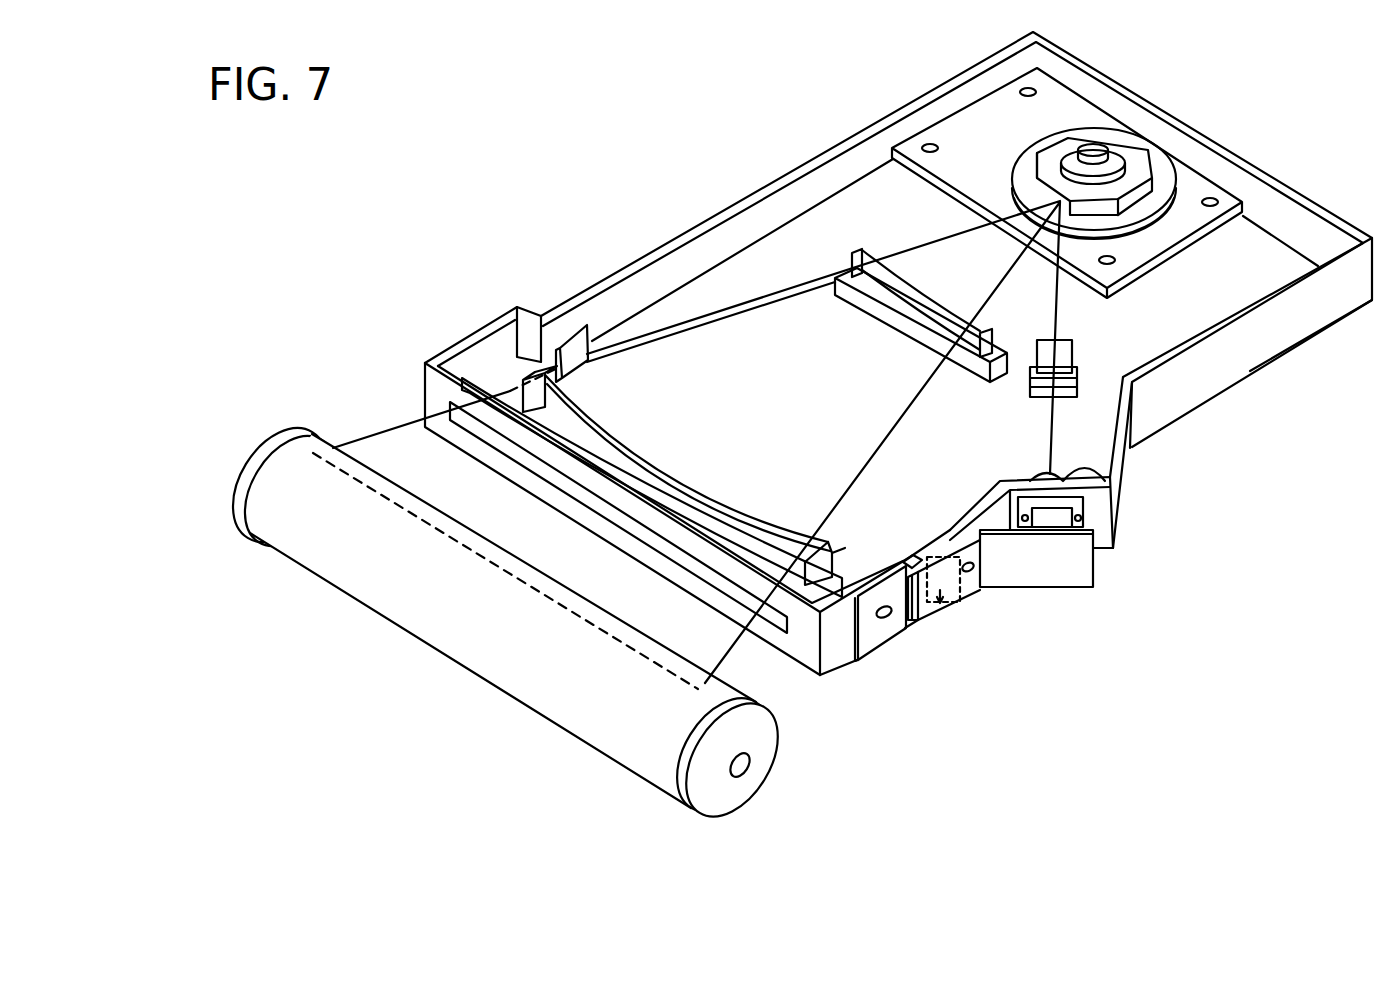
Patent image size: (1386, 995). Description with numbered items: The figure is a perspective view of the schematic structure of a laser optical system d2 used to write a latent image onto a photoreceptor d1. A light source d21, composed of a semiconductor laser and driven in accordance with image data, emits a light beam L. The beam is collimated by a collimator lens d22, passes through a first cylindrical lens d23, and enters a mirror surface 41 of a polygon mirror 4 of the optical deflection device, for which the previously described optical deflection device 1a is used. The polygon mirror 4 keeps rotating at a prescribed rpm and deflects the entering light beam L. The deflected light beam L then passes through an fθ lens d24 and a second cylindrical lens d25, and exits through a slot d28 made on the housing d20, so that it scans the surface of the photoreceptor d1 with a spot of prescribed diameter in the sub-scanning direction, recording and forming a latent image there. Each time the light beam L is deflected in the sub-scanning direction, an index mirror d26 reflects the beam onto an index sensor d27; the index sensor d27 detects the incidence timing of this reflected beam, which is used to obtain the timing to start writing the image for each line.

The photoreceptor d1 is at (267, 433).
The laser optical system d2 is at (737, 180).
The polygon mirror 4 is at (1137, 154).
The mirror surface 41 is at (1040, 188).
The optical deflection device 1a is at (1197, 187).
The housing d20 is at (1255, 377).
The light source d21 is at (1052, 522).
The collimator lens d22 is at (1110, 477).
The first cylindrical lens d23 is at (1072, 355).
The fθ lens d24 is at (870, 262).
The second cylindrical lens d25 is at (673, 436).
The index mirror d26 is at (570, 322).
The index sensor d27 is at (947, 597).
The slot d28 is at (510, 473).
The light beam L is at (1050, 425).